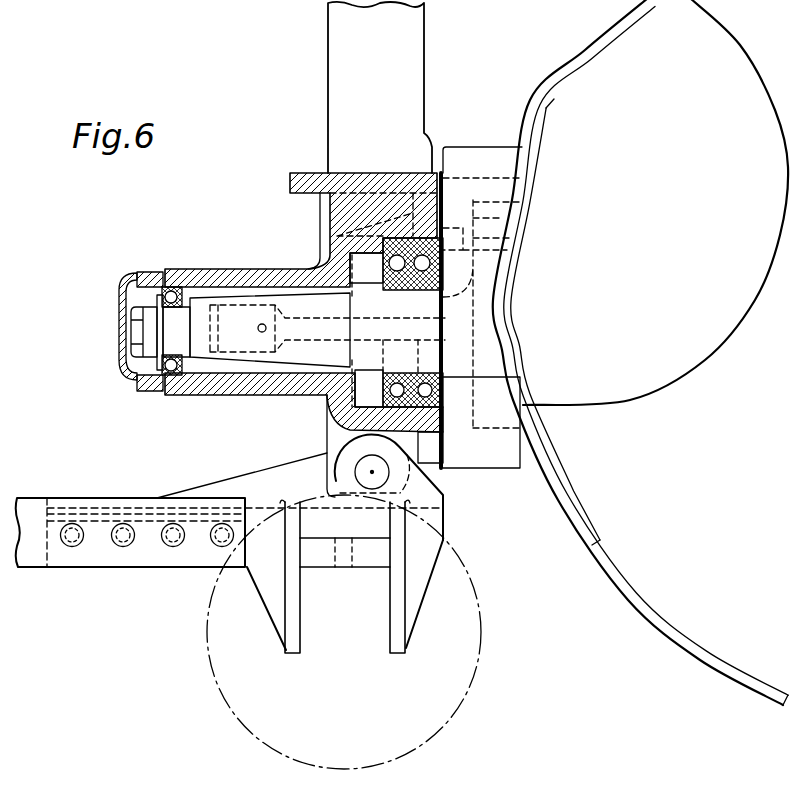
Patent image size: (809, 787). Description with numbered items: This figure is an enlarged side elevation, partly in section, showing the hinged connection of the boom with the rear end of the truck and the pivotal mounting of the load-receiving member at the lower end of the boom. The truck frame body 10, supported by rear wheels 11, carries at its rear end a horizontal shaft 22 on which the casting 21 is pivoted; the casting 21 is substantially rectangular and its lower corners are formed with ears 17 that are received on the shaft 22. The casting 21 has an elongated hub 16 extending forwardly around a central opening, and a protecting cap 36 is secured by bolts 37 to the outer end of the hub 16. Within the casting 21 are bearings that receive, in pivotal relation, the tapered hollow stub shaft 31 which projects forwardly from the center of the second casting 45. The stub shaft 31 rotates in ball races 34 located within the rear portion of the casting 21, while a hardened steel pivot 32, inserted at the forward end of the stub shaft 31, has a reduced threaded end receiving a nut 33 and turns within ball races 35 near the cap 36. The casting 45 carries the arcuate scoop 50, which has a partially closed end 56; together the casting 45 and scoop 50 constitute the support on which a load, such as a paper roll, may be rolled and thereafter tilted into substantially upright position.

The frame body of the truck 10 is at (102, 564).
The rear wheels 11 is at (344, 632).
The elongated hub 16 is at (200, 390).
The ears 17 is at (328, 458).
The casting 21 is at (272, 268).
The shaft 22 is at (360, 463).
The tapered hollow stub shaft 31 is at (317, 331).
The hardened steel pivot 32 is at (248, 329).
The nut 33 is at (142, 334).
The ball races 34 is at (434, 266).
The ball races 35 is at (176, 272).
The protecting cap 36 is at (121, 300).
The bolts 37 is at (136, 391).
The casting 45 is at (500, 458).
The arcuate scoop 50 is at (568, 498).
The partially closed end 56 is at (655, 202).